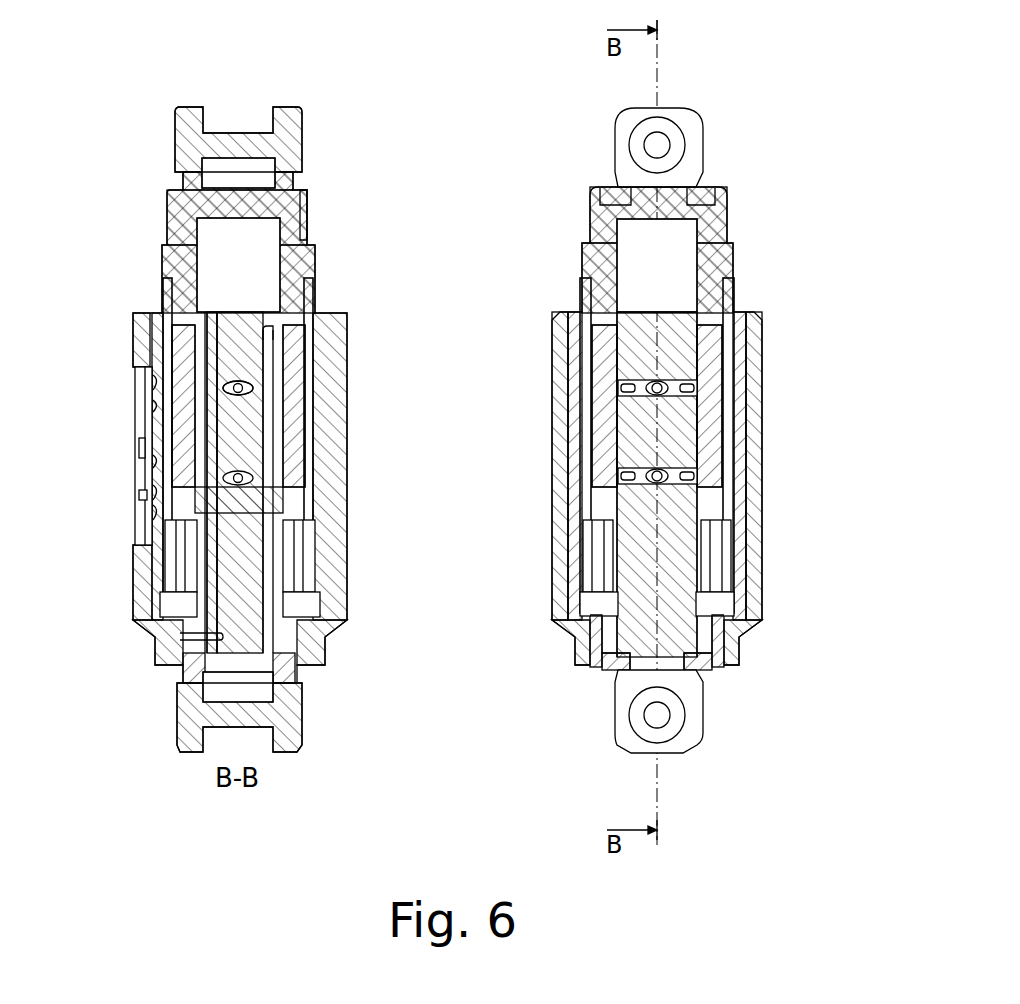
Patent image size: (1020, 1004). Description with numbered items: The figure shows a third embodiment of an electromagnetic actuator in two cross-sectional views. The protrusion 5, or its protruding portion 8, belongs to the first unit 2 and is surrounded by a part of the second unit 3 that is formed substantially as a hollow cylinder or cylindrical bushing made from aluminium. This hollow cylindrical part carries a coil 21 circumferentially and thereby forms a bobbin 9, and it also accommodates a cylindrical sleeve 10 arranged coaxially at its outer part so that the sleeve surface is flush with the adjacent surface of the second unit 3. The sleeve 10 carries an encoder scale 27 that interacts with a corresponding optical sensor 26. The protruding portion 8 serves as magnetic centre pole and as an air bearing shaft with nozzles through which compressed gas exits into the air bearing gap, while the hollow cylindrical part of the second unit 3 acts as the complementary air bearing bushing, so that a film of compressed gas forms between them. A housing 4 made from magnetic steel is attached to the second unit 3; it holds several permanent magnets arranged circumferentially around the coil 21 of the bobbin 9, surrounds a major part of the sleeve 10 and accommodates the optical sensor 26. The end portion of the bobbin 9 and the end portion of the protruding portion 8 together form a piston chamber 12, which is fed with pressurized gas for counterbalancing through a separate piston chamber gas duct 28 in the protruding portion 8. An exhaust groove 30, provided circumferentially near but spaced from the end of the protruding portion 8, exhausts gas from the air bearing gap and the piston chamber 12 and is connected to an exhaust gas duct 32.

The first unit 2 is at (565, 722).
The second unit 3 is at (568, 145).
The housing 4 is at (560, 530).
The protrusion 5 is at (882, 312).
The protruding portion 8 is at (688, 452).
The bobbin 9 is at (789, 437).
The sleeve 10 is at (748, 296).
The piston chamber 12 is at (658, 262).
The coil 21 is at (715, 388).
The optical sensor 26 is at (143, 507).
The encoder scale 27 is at (142, 420).
The piston chamber gas duct 28 is at (212, 325).
The exhaust groove 30 is at (618, 335).
The exhaust gas duct 32 is at (272, 335).